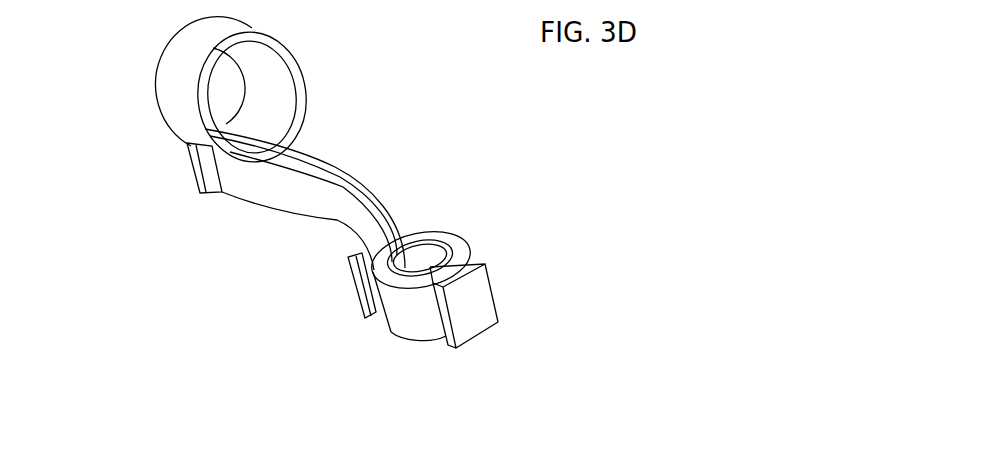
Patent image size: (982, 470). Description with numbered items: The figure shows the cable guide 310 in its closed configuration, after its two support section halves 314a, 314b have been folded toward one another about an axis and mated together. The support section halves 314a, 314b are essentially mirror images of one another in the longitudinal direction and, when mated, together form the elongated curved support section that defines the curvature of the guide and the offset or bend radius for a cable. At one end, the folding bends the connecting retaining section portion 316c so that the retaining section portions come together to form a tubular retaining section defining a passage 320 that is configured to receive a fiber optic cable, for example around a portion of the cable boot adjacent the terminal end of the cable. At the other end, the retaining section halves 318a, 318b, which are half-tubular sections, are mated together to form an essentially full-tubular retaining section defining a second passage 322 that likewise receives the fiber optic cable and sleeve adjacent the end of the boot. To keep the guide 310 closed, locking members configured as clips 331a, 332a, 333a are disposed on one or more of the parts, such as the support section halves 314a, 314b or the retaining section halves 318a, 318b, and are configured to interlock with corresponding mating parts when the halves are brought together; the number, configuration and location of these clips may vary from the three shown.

The cable guide 310 is at (222, 275).
The retaining section portion 316c is at (198, 37).
The passage 320 is at (236, 95).
The support section half 314a is at (350, 178).
The support section half 314b is at (272, 190).
The clip 331a is at (203, 172).
The clip 332a is at (362, 282).
The retaining section half 318a is at (455, 245).
The passage 322 is at (420, 262).
The retaining section half 318b is at (412, 328).
The clip 333a is at (448, 323).